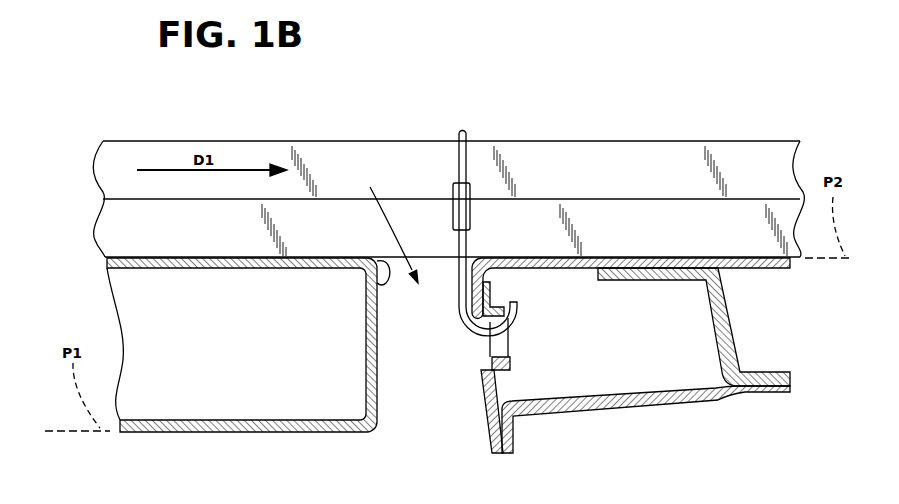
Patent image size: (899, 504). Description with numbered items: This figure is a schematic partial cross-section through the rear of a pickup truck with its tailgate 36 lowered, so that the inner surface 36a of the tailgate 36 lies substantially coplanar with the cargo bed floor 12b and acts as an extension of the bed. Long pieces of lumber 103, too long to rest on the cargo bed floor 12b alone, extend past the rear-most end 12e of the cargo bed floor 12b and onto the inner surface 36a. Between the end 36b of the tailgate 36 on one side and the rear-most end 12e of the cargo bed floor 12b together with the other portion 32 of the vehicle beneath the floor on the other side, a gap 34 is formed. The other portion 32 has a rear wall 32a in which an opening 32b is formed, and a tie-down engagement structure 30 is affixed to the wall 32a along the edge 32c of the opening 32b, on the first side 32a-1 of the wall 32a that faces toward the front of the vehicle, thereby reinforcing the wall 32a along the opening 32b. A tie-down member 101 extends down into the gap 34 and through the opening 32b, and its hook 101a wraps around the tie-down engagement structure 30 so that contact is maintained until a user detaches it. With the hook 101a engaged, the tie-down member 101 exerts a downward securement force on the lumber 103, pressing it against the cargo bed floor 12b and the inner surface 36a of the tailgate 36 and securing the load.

The lumber pieces 103 is at (757, 160).
The tie-down member 101 is at (452, 217).
The hook 101a is at (461, 296).
The cargo bed floor 12b is at (631, 240).
The rear-most end of the cargo bed floor 12e is at (480, 255).
The tailgate 36 is at (224, 321).
The inner surface of the tailgate 36a is at (233, 258).
The end of the tailgate 36b is at (383, 265).
The gap 34 is at (385, 227).
The tie-down engagement structure 30 is at (592, 378).
The other portion of the vehicle 32 is at (646, 406).
The rear wall 32a is at (485, 432).
The first side of the wall 32a-1 is at (506, 398).
The opening 32b is at (489, 368).
The edge of the opening 32c is at (486, 313).